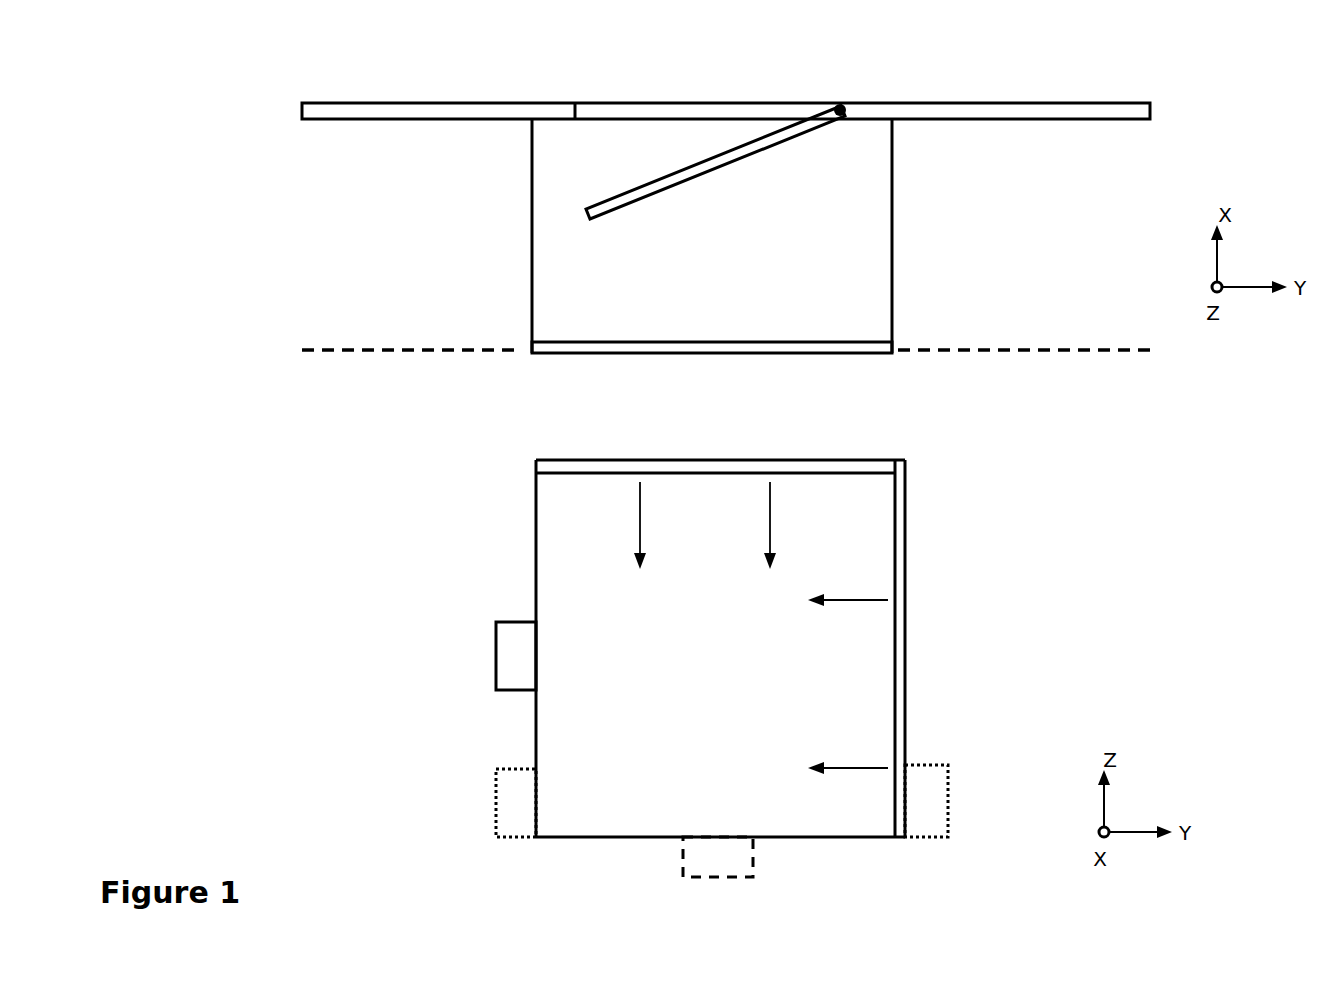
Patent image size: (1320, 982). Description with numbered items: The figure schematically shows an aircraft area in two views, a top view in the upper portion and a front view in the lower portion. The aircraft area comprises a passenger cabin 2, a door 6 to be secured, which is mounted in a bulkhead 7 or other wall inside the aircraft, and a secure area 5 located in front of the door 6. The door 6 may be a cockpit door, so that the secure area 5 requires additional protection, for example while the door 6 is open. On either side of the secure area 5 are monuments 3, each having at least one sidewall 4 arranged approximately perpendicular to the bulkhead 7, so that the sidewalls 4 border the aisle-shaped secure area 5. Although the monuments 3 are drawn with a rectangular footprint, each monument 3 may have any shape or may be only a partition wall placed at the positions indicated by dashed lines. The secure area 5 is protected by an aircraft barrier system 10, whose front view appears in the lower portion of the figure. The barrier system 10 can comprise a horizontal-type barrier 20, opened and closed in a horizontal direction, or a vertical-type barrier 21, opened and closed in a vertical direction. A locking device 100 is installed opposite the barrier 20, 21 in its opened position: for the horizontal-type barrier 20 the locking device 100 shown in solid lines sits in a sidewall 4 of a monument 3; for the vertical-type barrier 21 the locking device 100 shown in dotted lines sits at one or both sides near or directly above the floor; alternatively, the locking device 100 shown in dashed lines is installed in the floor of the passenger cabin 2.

The passenger cabin 2 is at (1109, 415).
The monument 3 is at (382, 252).
The sidewall 4 is at (532, 227).
The secure area 5 is at (722, 253).
The door 6 is at (785, 130).
The bulkhead 7 is at (949, 110).
The aircraft barrier system 10 is at (505, 373).
The horizontal-type barrier 20 is at (905, 600).
The vertical-type barrier 21 is at (848, 470).
The locking device 100 is at (505, 636).